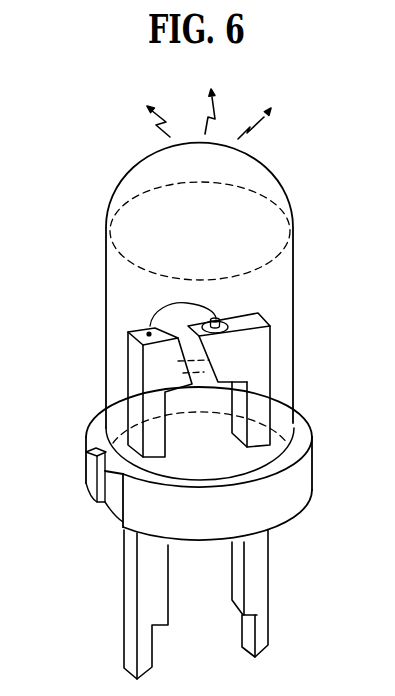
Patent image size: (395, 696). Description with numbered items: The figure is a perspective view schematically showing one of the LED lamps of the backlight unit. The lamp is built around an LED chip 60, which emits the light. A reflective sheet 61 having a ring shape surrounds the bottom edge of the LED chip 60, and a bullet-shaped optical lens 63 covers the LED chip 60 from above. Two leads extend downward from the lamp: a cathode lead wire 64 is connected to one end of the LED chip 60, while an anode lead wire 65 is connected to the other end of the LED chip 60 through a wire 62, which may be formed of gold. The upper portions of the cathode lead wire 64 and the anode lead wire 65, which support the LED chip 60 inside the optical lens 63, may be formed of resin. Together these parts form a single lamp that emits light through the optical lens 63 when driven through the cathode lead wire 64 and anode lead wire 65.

The LED chip 60 is at (216, 319).
The reflective sheet 61 is at (221, 329).
The wire 62 is at (149, 333).
The optical lens 63 is at (277, 177).
The cathode lead wire 64 is at (258, 580).
The anode lead wire 65 is at (150, 588).